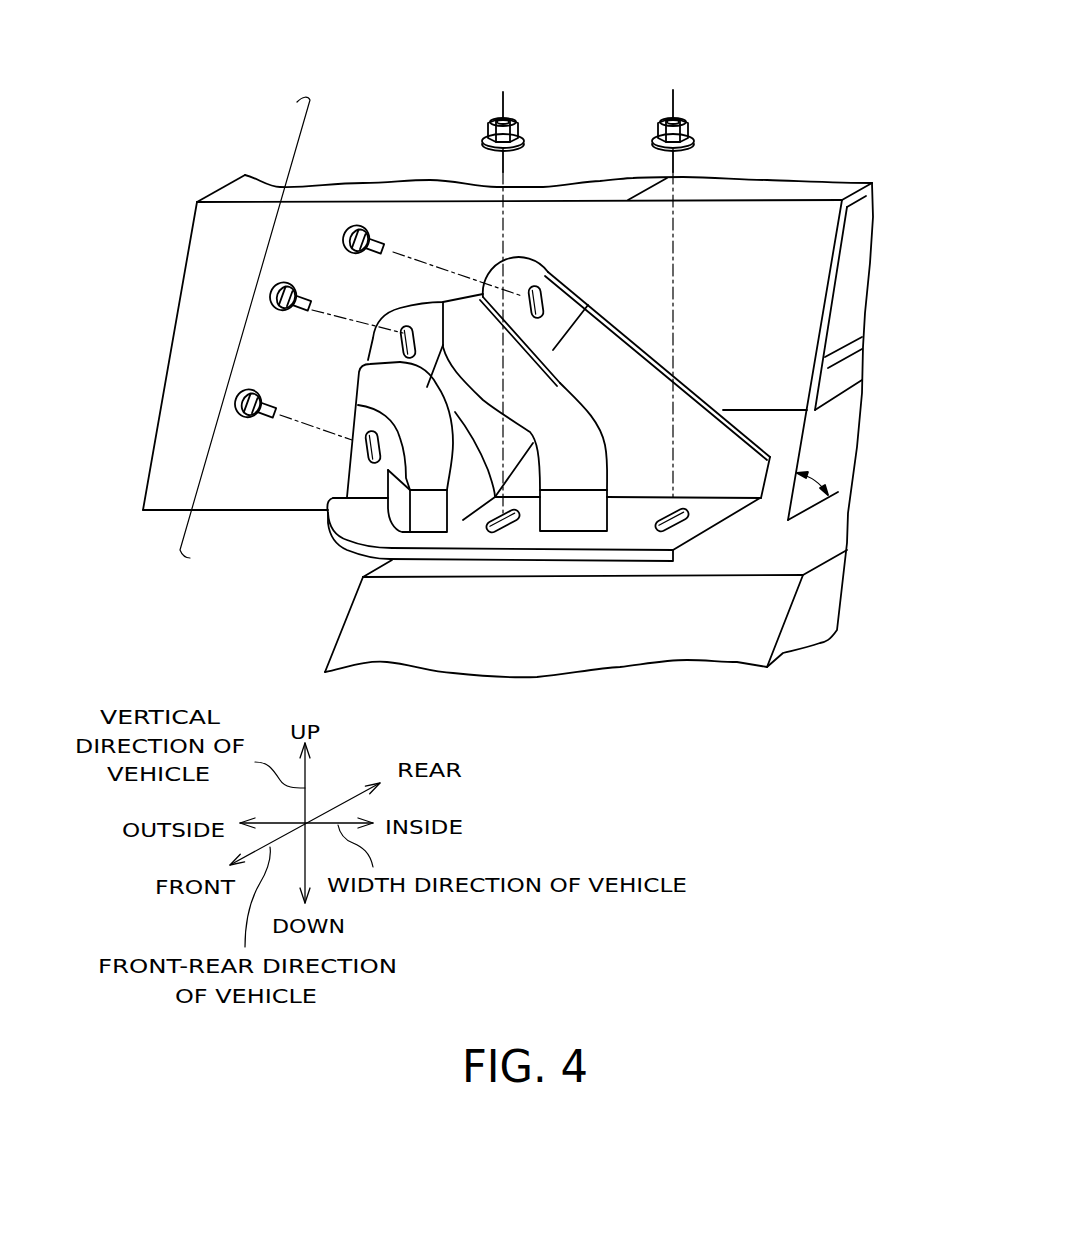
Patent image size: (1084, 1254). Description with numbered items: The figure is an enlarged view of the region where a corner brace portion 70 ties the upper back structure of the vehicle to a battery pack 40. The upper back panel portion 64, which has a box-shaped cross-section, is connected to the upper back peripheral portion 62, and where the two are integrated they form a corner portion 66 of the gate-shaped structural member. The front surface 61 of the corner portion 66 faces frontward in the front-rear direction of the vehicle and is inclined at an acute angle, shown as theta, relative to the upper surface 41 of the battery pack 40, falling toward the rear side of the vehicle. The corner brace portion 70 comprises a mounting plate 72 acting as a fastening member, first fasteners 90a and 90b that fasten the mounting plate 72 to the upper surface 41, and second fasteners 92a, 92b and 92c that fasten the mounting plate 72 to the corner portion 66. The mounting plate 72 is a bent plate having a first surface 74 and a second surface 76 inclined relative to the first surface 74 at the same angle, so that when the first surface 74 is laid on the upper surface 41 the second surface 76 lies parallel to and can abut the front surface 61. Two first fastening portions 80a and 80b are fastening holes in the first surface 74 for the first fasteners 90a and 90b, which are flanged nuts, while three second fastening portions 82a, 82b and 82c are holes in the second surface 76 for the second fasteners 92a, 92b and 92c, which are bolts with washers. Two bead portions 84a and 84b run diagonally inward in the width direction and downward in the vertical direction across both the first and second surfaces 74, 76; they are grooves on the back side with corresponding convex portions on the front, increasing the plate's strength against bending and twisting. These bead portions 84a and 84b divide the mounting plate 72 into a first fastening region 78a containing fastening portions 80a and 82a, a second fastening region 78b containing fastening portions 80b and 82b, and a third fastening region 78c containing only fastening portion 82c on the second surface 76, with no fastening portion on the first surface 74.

The battery pack 40 is at (553, 658).
The upper surface of battery pack 41 is at (803, 562).
The front surface of corner portion 61 is at (800, 400).
The upper back peripheral portion 62 is at (200, 240).
The upper back panel portion 64 is at (810, 190).
The corner portion 66 is at (627, 74).
The corner brace portion 70 is at (243, 330).
The mounting plate 72 is at (513, 442).
The first surface 74 is at (722, 531).
The second surface 76 is at (740, 467).
The first fastening region 78a is at (572, 359).
The second fastening region 78b is at (454, 388).
The third fastening region 78c is at (353, 435).
The first fastening portion 80a is at (654, 513).
The first fastening portion 80b is at (487, 513).
The second fastening portion 82a is at (533, 290).
The second fastening portion 82b is at (404, 328).
The second fastening portion 82c is at (365, 449).
The bead portion 84a is at (577, 517).
The bead portion 84b is at (420, 517).
The first fastener 90a is at (698, 135).
The first fastener 90b is at (480, 135).
The second fastener 92a is at (378, 230).
The second fastener 92b is at (292, 283).
The second fastener 92c is at (257, 390).